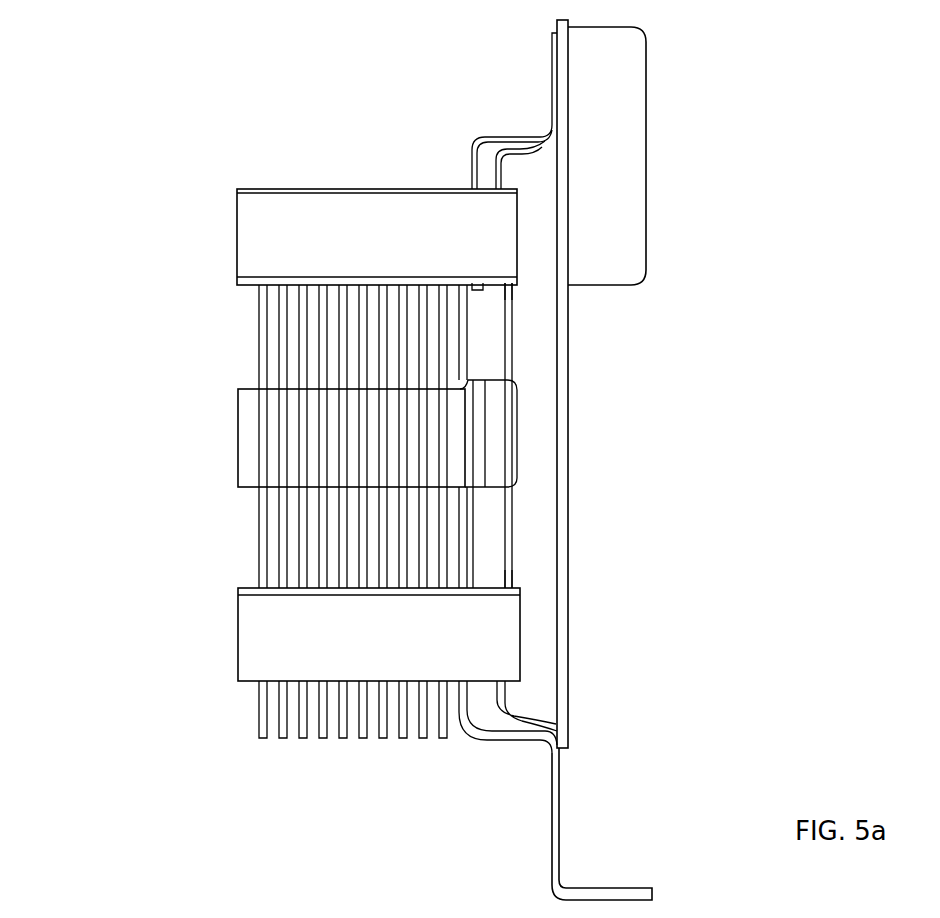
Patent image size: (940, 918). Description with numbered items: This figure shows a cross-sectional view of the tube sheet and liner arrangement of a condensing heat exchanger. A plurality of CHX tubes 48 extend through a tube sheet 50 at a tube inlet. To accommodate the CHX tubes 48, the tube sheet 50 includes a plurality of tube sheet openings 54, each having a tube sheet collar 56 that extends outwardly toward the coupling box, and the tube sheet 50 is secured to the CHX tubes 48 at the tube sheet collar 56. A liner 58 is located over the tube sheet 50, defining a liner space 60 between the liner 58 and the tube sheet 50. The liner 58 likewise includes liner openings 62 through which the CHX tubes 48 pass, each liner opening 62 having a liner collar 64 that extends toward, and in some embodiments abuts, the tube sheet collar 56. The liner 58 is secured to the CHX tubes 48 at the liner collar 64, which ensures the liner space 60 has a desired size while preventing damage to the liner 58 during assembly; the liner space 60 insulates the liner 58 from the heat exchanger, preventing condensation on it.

The CHX tube 48 is at (314, 252).
The tube sheet 50 is at (470, 545).
The tube sheet opening 54 is at (487, 588).
The tube sheet collar 56 is at (477, 187).
The liner 58 is at (508, 529).
The liner space 60 is at (490, 503).
The liner opening 62 is at (512, 285).
The liner collar 64 is at (492, 187).